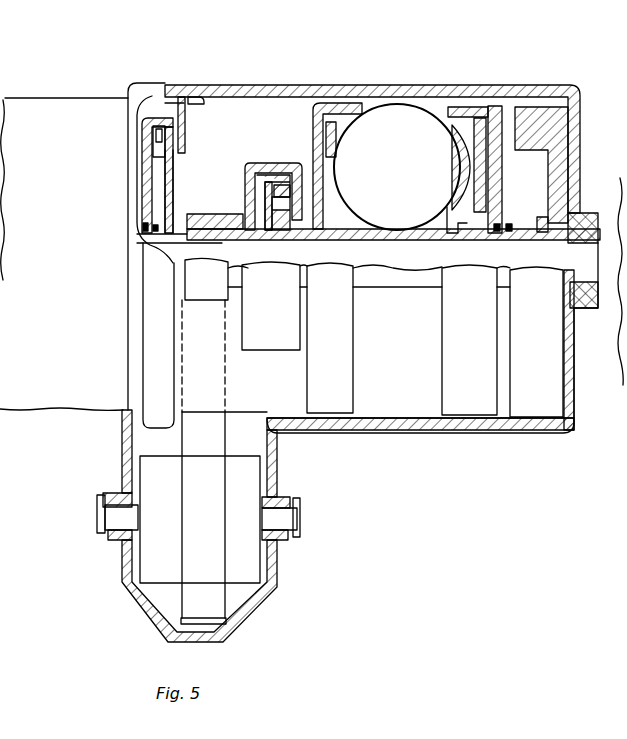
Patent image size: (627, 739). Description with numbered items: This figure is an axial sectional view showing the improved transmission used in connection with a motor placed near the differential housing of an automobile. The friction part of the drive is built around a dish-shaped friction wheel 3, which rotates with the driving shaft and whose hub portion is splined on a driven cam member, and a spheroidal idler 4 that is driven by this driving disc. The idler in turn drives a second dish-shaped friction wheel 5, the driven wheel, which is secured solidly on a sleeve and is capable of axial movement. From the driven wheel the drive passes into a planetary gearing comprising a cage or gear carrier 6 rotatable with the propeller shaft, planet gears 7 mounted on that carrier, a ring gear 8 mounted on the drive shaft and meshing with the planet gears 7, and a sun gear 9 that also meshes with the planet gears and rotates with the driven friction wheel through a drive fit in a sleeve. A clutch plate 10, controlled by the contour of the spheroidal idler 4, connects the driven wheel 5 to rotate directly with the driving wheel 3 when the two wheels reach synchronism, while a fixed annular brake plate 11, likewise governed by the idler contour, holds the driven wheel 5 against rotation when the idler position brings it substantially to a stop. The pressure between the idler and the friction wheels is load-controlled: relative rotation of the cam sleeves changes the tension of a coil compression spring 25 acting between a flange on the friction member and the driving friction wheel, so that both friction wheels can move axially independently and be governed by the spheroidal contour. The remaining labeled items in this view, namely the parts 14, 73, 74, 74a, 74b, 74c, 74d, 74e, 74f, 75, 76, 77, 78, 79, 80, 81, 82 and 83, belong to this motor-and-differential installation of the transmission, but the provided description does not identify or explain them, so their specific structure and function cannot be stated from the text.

The dish-shaped friction wheel 3 is at (494, 184).
The spheroidal idler 4 is at (367, 207).
The second dish-shaped friction wheel 5 is at (313, 129).
The gear carrier 6 is at (258, 168).
The planet gear 7 is at (262, 193).
The ring gear 8 is at (262, 181).
The sun gear 9 is at (290, 232).
The clutch plate 10 is at (483, 122).
The annular brake plate 11 is at (338, 125).
The lens 14 is at (460, 172).
The coil compression spring 25 is at (505, 223).
The mounting plate 73 is at (58, 398).
The housing 74 is at (272, 577).
The housing wall 74a is at (170, 177).
The housing bracket 74b is at (158, 133).
The housing fastener 74c is at (149, 222).
The housing wall 74d is at (192, 178).
The housing hook 74e is at (205, 100).
The housing rib 74f is at (163, 122).
The motor 75 is at (252, 487).
The coupling 76 is at (195, 277).
The shaft 77 is at (230, 379).
The shaft end 78 is at (184, 598).
The plate 79 is at (378, 264).
The cover 80 is at (576, 108).
The flange 81 is at (575, 235).
The screw head 82 is at (100, 512).
The screw 83 is at (122, 518).